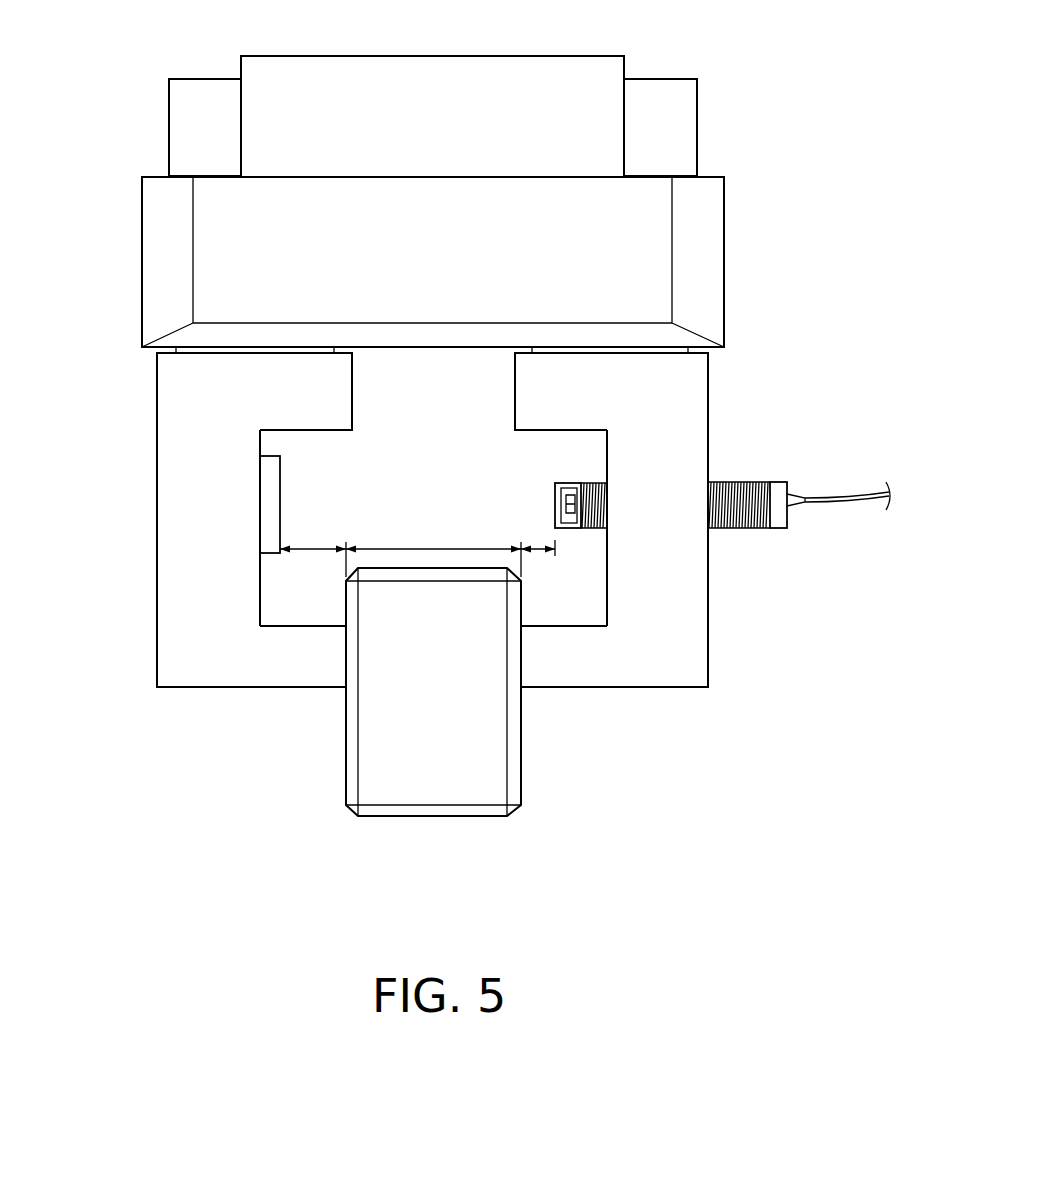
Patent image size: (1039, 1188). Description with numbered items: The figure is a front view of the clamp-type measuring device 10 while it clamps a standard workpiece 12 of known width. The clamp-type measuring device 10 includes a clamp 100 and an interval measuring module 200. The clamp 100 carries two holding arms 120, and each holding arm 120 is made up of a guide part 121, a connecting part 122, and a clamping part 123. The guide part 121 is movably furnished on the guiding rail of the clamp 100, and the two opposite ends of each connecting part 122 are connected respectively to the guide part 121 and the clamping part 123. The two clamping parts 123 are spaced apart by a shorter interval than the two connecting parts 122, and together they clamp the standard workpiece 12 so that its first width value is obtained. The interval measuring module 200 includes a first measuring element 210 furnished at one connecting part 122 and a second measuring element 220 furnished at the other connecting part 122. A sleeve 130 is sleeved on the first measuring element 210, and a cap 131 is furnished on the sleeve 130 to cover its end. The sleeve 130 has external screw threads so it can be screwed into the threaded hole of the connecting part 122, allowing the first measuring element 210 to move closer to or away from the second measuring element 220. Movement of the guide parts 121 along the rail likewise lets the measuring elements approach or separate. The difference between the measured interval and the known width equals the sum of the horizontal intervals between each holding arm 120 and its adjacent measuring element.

The clamp-type measuring device 10 is at (130, 87).
The standard workpiece 12 is at (436, 810).
The clamp 100 is at (133, 282).
The holding arm 120 is at (80, 404).
The guide part 121 is at (245, 380).
The connecting part 122 is at (190, 533).
The clamping part 123 is at (298, 663).
The sleeve 130 is at (592, 529).
The cap 131 is at (576, 483).
The interval measuring module 200 is at (681, 498).
The first measuring element 210 is at (568, 503).
The second measuring element 220 is at (274, 473).